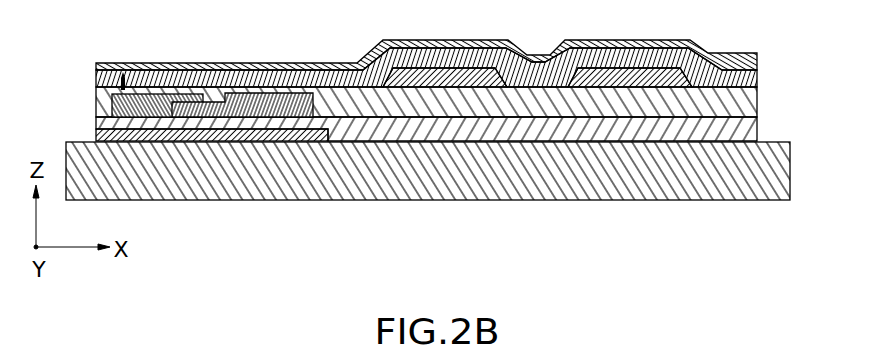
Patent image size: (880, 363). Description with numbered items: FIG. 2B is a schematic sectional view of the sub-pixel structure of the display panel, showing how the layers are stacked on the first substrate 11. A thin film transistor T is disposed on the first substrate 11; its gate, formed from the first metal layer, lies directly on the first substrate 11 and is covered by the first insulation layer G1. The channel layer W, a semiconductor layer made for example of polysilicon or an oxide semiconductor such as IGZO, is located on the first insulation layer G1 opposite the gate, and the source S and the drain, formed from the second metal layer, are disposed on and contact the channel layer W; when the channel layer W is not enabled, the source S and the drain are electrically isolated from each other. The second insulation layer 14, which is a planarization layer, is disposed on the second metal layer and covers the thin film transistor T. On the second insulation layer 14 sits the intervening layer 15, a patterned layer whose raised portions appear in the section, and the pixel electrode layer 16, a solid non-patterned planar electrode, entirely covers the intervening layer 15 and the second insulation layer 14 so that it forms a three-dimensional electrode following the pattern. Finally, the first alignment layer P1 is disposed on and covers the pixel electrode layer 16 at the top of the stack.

The first substrate 11 is at (777, 187).
The first insulation layer G1 is at (748, 137).
The second insulation layer 14 is at (740, 107).
The source S is at (153, 100).
The channel layer W is at (213, 98).
The intervening layer 15 is at (617, 52).
The pixel electrode layer 16 is at (757, 80).
The first alignment layer P1 is at (756, 53).
The thin film transistor T is at (122, 64).